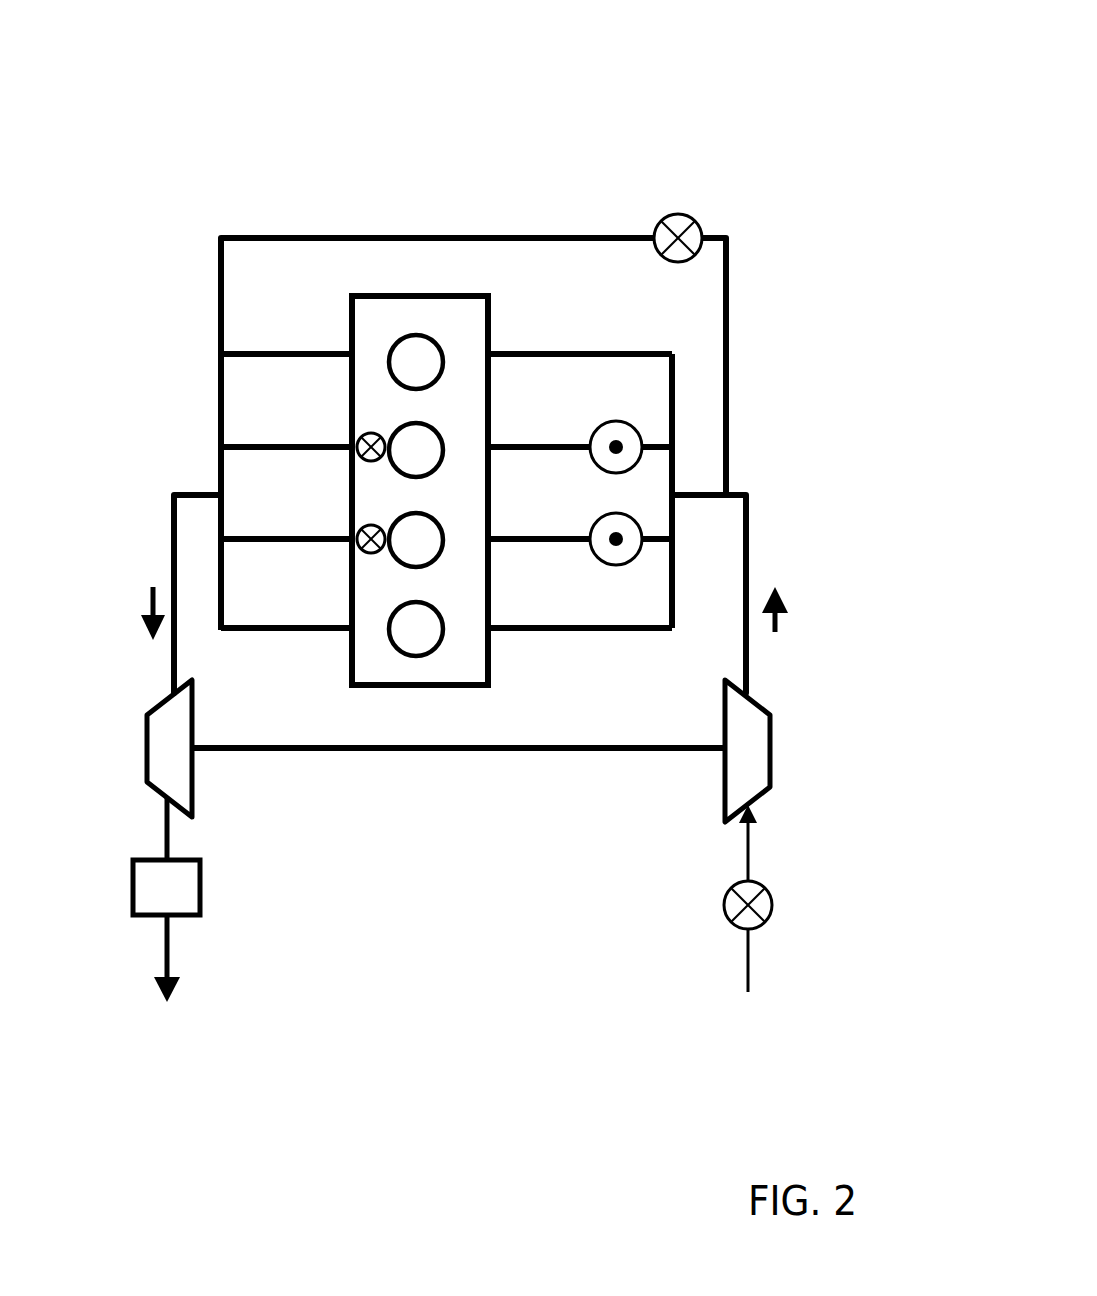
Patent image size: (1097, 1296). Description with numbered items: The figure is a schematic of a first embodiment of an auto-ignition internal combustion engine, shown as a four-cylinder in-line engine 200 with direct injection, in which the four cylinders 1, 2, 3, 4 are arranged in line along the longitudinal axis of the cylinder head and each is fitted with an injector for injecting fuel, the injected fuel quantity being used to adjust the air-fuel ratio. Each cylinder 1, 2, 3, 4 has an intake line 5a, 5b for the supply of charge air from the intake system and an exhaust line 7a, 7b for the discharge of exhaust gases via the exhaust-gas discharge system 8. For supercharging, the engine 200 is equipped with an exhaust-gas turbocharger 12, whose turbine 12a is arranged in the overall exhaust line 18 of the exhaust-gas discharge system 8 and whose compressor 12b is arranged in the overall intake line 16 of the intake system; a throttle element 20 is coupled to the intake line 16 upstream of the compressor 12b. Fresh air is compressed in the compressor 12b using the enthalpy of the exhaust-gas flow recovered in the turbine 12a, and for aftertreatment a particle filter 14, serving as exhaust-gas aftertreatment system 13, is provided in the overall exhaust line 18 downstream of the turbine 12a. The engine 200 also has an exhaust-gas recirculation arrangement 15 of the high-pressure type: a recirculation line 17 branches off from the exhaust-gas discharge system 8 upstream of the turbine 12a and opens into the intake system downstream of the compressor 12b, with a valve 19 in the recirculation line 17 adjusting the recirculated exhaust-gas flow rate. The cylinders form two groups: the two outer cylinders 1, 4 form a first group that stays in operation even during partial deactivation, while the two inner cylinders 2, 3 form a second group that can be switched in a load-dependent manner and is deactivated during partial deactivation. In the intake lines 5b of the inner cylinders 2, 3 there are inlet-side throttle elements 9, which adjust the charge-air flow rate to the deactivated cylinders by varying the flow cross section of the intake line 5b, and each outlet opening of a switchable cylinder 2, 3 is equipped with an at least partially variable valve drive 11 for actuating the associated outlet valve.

The four-cylinder in-line engine 200 is at (708, 36).
The exhaust-gas discharge system 8 is at (270, 490).
The first outer cylinder 1 is at (416, 362).
The first inner cylinder 2 is at (416, 450).
The second inner cylinder 3 is at (416, 540).
The second outer cylinder 4 is at (416, 629).
The intake line of outer cylinder 5a is at (547, 348).
The intake line of inner cylinder 5b is at (527, 443).
The exhaust line of outer cylinder 7a is at (302, 353).
The exhaust line of inner cylinder 7b is at (303, 442).
The inlet-side throttle element 9 is at (602, 460).
The variable valve drive 11 is at (360, 435).
The exhaust-gas turbocharger 12 is at (418, 753).
The turbine 12a is at (160, 762).
The compressor 12b is at (773, 788).
The exhaust-gas aftertreatment system 13 is at (120, 900).
The particle filter 14 is at (133, 912).
The exhaust-gas recirculation arrangement 15 is at (292, 201).
The overall intake line 16 is at (748, 637).
The recirculation line 17 is at (543, 237).
The overall exhaust line 18 is at (172, 570).
The valve 19 is at (695, 220).
The throttle element 20 is at (725, 906).